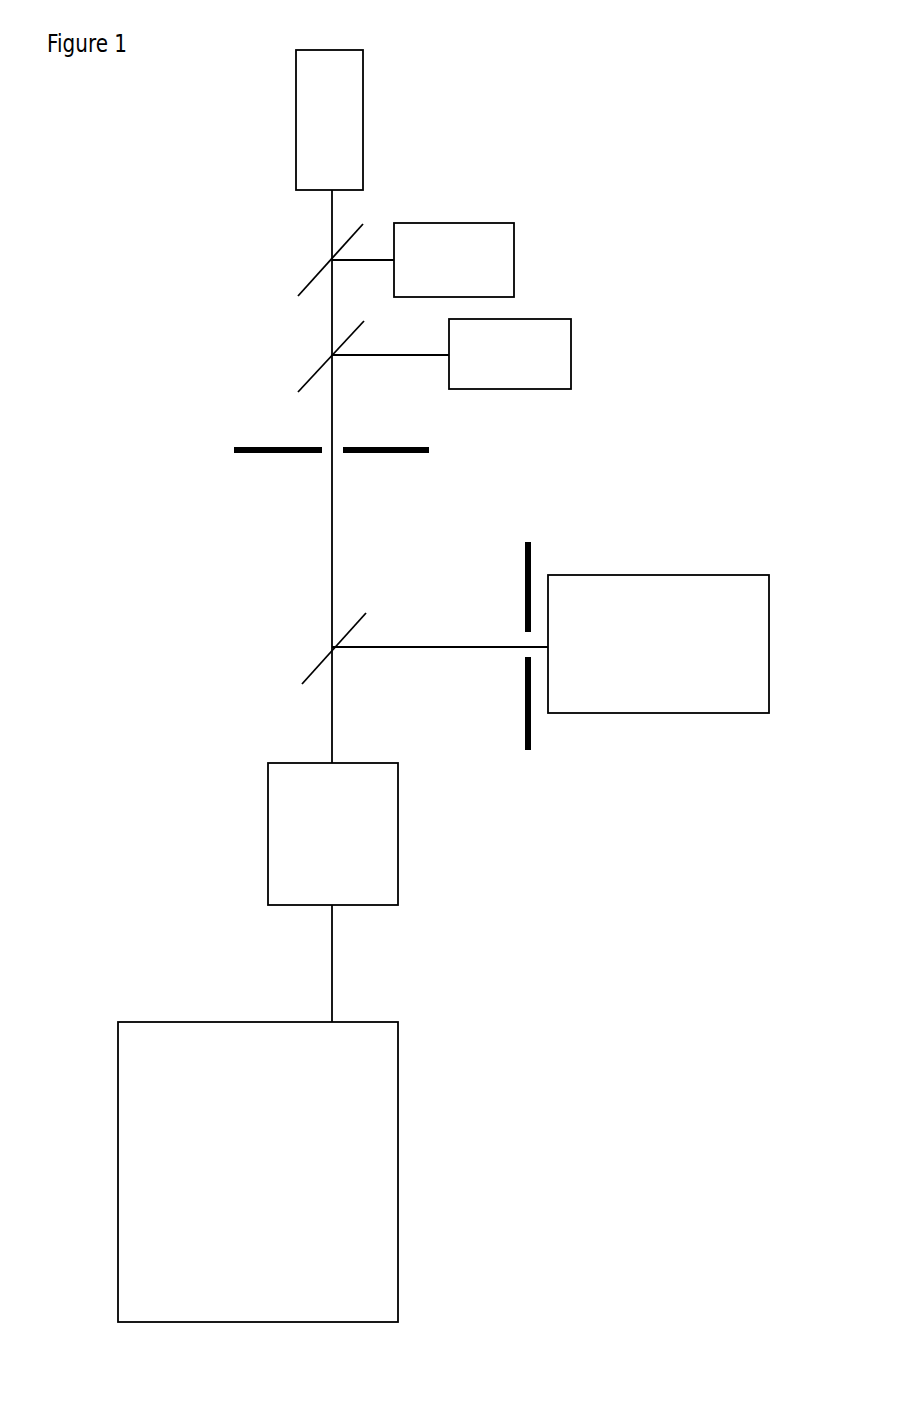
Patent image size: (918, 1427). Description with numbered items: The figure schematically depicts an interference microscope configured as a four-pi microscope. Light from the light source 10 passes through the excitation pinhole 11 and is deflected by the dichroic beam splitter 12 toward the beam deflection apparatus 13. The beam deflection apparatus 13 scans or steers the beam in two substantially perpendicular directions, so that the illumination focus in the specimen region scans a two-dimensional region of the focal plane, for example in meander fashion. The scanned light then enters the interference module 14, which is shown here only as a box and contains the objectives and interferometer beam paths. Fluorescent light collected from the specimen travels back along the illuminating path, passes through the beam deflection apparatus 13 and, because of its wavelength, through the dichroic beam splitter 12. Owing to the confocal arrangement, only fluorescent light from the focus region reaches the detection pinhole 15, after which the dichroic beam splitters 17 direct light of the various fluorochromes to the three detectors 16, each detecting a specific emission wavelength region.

The light source 10 is at (627, 562).
The excitation pinhole 11 is at (552, 761).
The dichroic beam splitter 12 is at (310, 648).
The beam deflection apparatus 13 is at (433, 847).
The interference module 14 is at (419, 1157).
The detection pinhole 15 is at (225, 450).
The detectors 16 is at (548, 294).
The dichroic beam splitters 17 is at (299, 365).